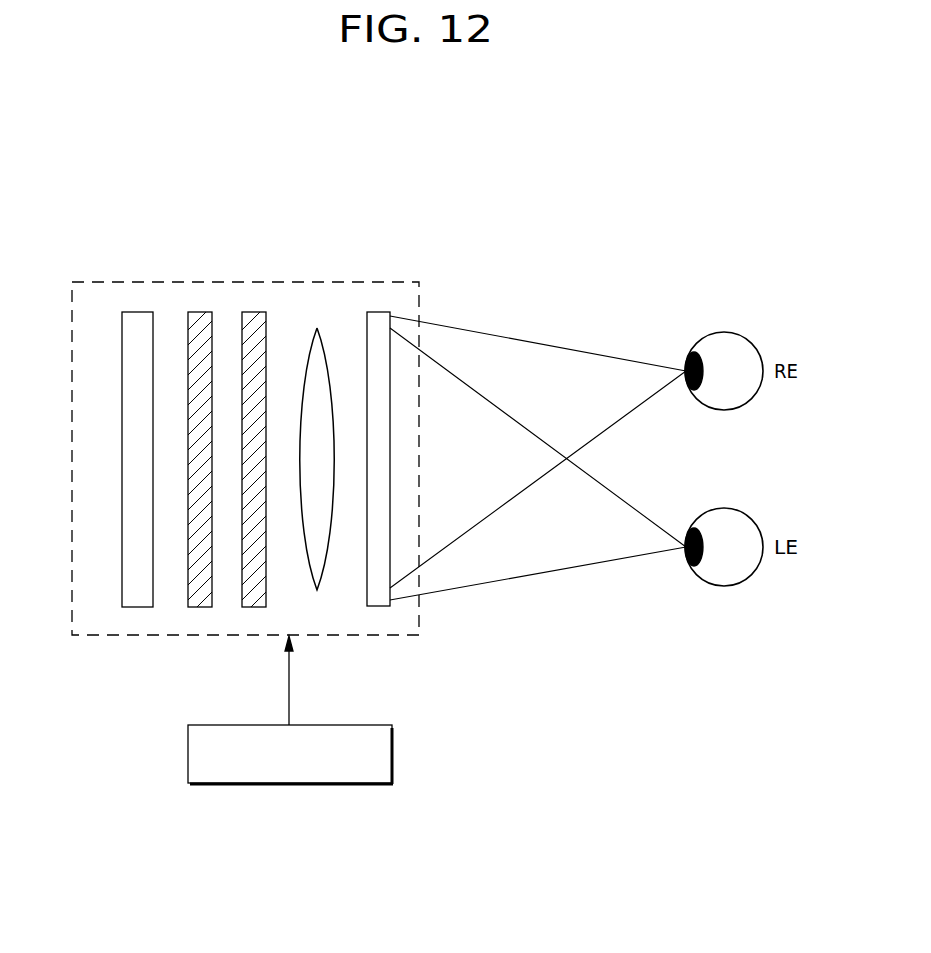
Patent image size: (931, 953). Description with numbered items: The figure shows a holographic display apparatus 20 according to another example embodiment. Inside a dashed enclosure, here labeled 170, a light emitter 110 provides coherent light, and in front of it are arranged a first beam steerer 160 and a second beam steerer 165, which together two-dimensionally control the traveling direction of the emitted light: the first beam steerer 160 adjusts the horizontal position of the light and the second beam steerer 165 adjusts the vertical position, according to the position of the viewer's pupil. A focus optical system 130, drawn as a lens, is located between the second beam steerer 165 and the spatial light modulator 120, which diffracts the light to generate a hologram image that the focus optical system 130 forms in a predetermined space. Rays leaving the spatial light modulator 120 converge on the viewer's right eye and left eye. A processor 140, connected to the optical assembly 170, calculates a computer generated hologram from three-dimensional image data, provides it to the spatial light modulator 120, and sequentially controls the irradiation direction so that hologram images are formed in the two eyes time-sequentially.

The holographic display apparatus 20 is at (558, 218).
The light emitter 110 is at (137, 312).
The first beam steerer 160 is at (199, 312).
The second beam steerer 165 is at (253, 312).
The focus optical system 130 is at (317, 328).
The spatial light modulator 120 is at (378, 312).
The display module 170 is at (420, 296).
The processor 140 is at (393, 755).